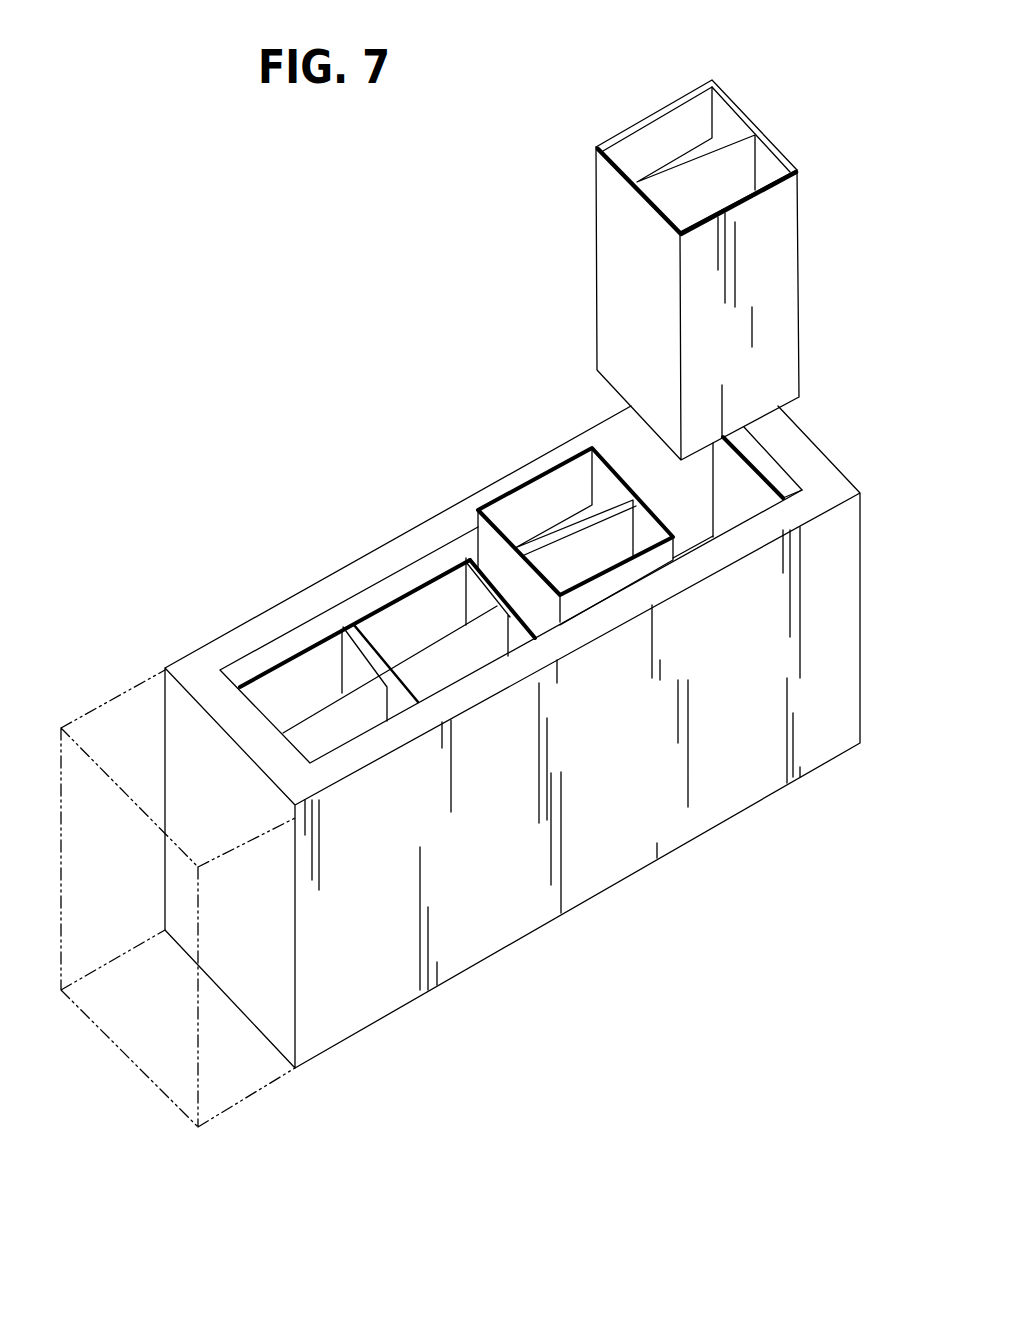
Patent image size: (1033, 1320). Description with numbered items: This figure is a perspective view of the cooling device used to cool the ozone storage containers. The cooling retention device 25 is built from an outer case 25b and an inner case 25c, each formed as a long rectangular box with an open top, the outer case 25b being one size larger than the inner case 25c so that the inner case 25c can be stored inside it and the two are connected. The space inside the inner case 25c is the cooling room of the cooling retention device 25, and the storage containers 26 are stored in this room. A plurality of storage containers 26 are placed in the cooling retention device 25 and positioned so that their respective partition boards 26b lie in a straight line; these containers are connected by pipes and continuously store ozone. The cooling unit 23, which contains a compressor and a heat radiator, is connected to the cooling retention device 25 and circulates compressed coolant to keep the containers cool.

The cooling unit 23 is at (120, 699).
The cooling retention device 25 is at (637, 893).
The outer case 25b is at (278, 615).
The inner case 25c is at (753, 492).
The storage container 26 is at (783, 233).
The partition board 26b is at (568, 525).